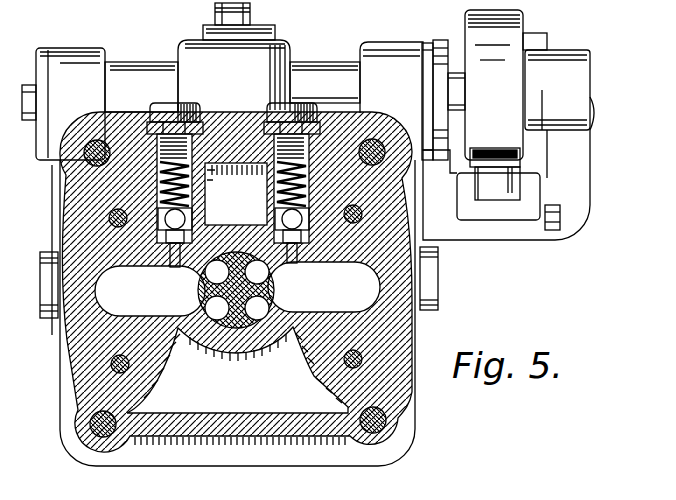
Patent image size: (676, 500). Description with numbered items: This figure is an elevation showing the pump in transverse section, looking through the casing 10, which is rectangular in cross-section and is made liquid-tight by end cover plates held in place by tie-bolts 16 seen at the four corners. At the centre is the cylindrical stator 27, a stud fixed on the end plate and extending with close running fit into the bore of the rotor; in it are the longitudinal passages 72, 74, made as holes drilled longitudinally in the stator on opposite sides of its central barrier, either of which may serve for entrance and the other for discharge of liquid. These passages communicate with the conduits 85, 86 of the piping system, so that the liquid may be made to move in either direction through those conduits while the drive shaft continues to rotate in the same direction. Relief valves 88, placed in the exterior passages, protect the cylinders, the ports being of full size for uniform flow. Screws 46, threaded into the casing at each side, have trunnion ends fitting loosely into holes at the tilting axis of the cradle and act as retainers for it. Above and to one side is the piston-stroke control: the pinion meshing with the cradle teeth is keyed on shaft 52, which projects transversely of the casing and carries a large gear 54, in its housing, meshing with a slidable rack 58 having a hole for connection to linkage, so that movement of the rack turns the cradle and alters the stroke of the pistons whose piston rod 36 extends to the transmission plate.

The casing 10 is at (56, 200).
The tie-bolts 16 is at (82, 140).
The stator 27 is at (212, 354).
The piston rod 36 is at (520, 13).
The screws 46 is at (46, 272).
The shaft 52 is at (596, 102).
The large gear 54 is at (518, 156).
The slidable rack 58 is at (521, 178).
The longitudinal passage 72 is at (269, 307).
The longitudinal passage 74 is at (208, 307).
The conduit 85 is at (150, 291).
The conduit 86 is at (324, 287).
The relief valves 88 is at (268, 113).